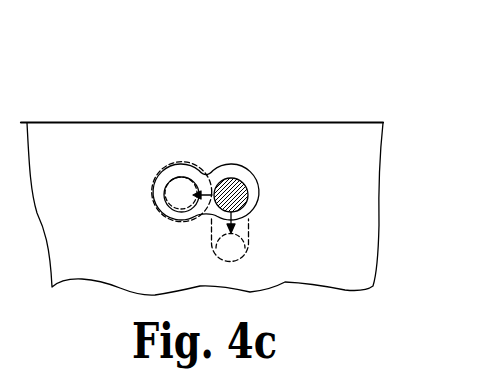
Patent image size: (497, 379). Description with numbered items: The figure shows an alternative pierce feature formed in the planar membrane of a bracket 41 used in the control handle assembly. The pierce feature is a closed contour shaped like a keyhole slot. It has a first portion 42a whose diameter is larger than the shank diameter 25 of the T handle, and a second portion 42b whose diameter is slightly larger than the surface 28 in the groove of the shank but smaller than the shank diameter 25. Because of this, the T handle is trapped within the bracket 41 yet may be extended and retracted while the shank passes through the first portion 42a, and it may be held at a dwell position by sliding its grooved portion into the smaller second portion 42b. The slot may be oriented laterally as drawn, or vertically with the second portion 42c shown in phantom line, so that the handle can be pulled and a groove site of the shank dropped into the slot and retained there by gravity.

The shank diameter 25 is at (164, 171).
The surface in the groove of the shank 28 is at (236, 178).
The bracket 41 is at (365, 122).
The first portion 42a is at (224, 166).
The second portion 42b is at (173, 176).
The second portion (vertical orientation) 42c is at (249, 240).